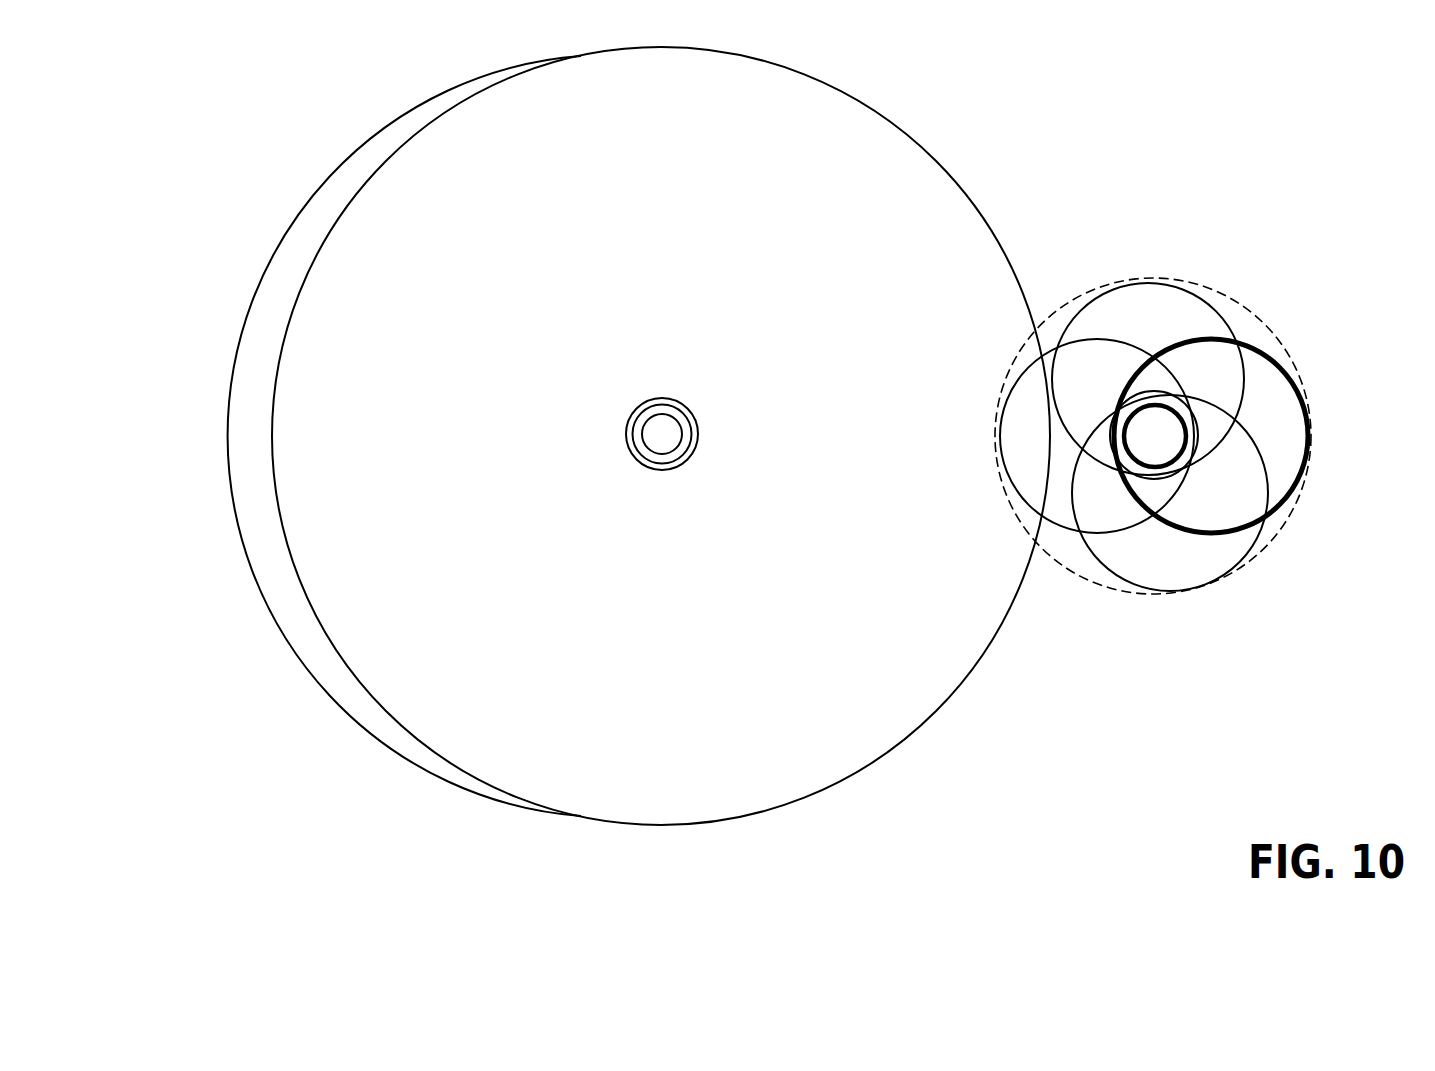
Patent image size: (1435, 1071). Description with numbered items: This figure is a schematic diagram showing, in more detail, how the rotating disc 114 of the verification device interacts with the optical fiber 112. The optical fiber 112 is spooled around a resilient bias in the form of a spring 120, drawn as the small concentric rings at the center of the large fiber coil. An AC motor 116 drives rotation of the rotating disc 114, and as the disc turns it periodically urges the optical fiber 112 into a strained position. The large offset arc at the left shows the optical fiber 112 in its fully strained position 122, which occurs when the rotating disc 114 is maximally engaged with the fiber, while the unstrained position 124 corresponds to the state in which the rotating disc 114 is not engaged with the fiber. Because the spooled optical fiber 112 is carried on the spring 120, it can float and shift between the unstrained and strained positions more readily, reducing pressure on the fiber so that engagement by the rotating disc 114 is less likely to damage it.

The optical fiber 112 is at (930, 152).
The rotating disc 114 is at (1222, 317).
The AC motor 116 is at (1262, 350).
The spring 120 is at (627, 428).
The fully strained position 122 is at (232, 402).
The unstrained position 124 is at (1052, 430).